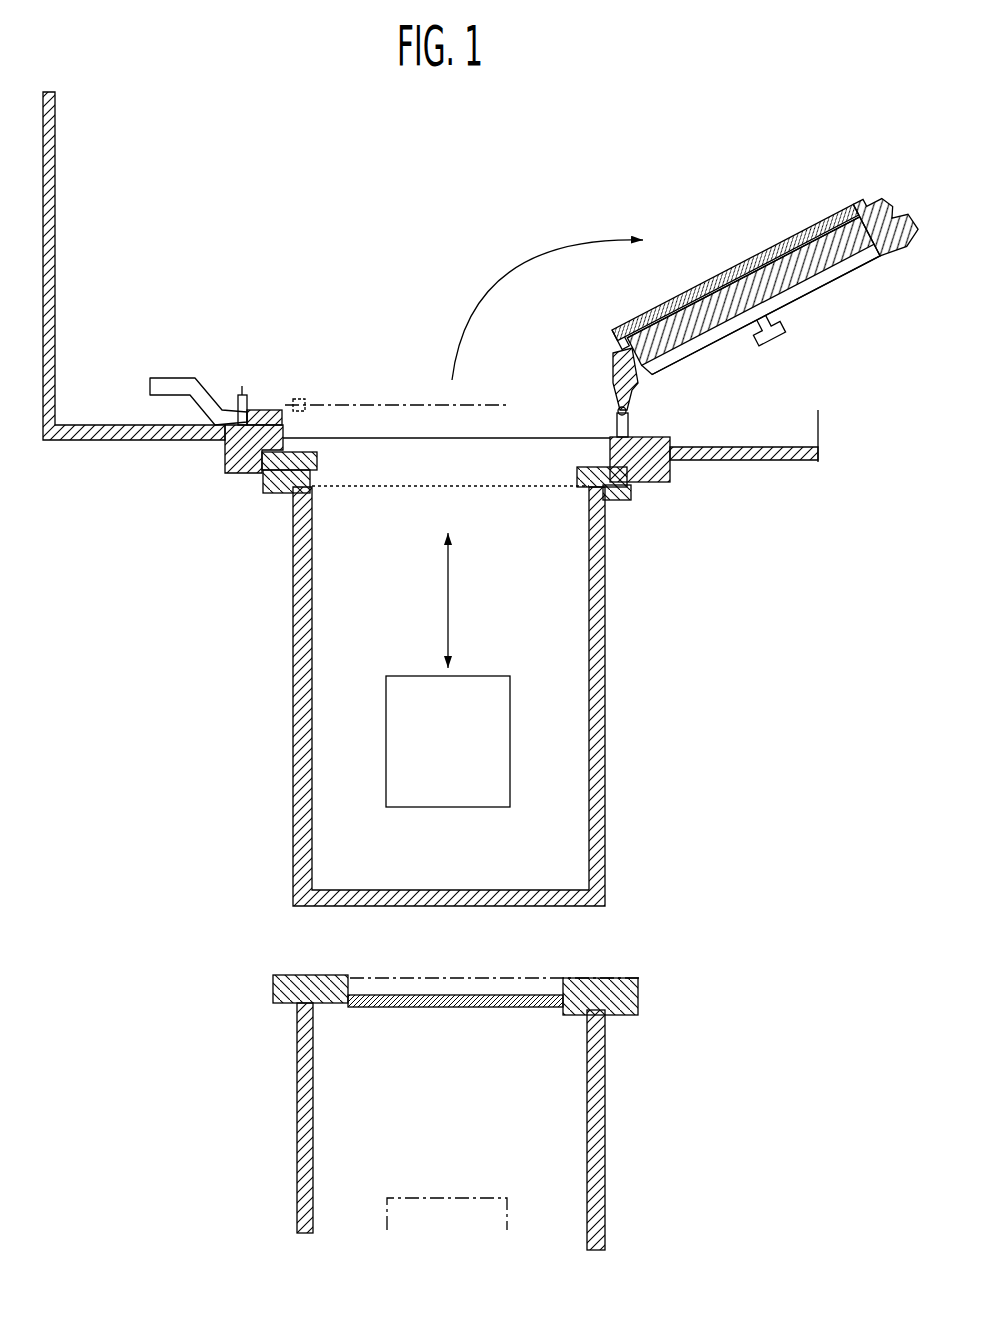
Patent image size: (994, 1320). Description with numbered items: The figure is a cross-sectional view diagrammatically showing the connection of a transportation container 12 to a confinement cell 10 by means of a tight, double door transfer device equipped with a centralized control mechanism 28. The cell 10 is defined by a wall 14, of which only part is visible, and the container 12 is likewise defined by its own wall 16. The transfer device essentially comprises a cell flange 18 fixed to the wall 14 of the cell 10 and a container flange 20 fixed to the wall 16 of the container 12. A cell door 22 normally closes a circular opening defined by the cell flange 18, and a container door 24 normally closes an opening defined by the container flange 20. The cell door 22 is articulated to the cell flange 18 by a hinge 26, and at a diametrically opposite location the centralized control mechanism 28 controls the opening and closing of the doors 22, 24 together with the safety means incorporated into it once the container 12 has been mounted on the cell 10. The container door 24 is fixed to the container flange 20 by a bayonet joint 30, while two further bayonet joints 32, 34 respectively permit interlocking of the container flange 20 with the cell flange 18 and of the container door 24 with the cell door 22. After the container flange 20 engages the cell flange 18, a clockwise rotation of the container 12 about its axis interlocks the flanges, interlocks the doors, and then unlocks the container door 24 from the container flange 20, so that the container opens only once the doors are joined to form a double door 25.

The confinement cell 10 is at (368, 152).
The transportation container 12 is at (383, 629).
The wall 14 is at (55, 198).
The container 16 is at (293, 773).
The cell flange 18 is at (231, 462).
The container flange 20 is at (278, 494).
The cell door 22 is at (692, 344).
The container door 24 is at (752, 258).
The double door 25 is at (836, 293).
The hinge 26 is at (626, 414).
The centralized control mechanism 28 is at (194, 376).
The bayonet joint 30 is at (300, 972).
The bayonet joint 32 is at (641, 497).
The bayonet joint 34 is at (798, 237).